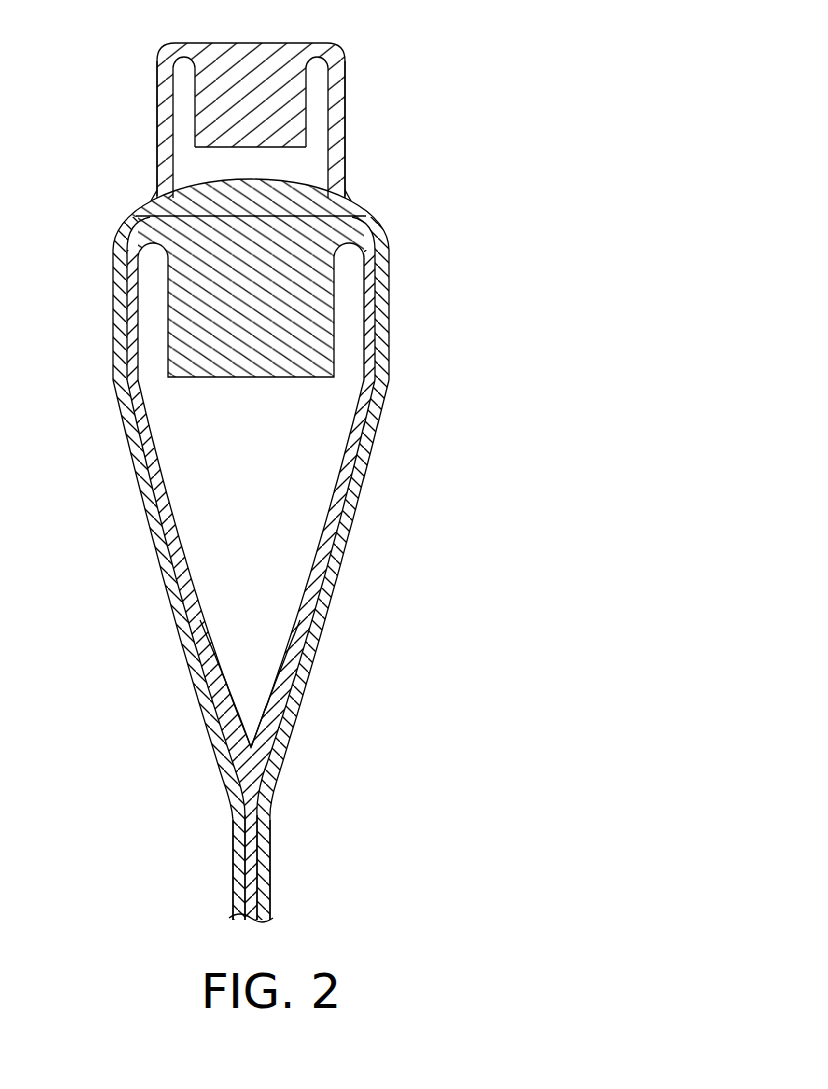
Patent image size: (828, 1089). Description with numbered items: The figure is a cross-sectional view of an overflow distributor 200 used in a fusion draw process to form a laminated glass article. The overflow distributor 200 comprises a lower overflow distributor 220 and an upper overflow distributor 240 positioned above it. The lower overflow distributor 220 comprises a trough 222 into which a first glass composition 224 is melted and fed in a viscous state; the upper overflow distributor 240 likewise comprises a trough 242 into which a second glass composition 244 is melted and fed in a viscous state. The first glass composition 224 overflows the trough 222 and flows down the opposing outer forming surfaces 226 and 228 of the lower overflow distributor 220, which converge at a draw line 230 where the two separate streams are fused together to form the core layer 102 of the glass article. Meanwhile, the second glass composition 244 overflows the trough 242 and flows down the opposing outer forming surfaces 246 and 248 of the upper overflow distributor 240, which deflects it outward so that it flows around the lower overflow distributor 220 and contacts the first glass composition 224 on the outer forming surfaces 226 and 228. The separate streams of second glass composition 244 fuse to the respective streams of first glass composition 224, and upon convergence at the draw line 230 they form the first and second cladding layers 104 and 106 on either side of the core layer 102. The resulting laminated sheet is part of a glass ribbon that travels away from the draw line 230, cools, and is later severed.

The overflow distributor 200 is at (418, 98).
The lower overflow distributor 220 is at (355, 291).
The trough 222 is at (167, 317).
The first glass composition 224 is at (247, 216).
The outer forming surface 226 is at (152, 452).
The outer forming surface 228 is at (335, 482).
The draw line 230 is at (277, 778).
The core layer 102 is at (243, 818).
The first cladding layer 104 is at (233, 868).
The second cladding layer 106 is at (270, 869).
The upper overflow distributor 240 is at (319, 78).
The trough 242 is at (190, 108).
The second glass composition 244 is at (255, 44).
The outer forming surface 246 is at (176, 158).
The outer forming surface 248 is at (322, 153).